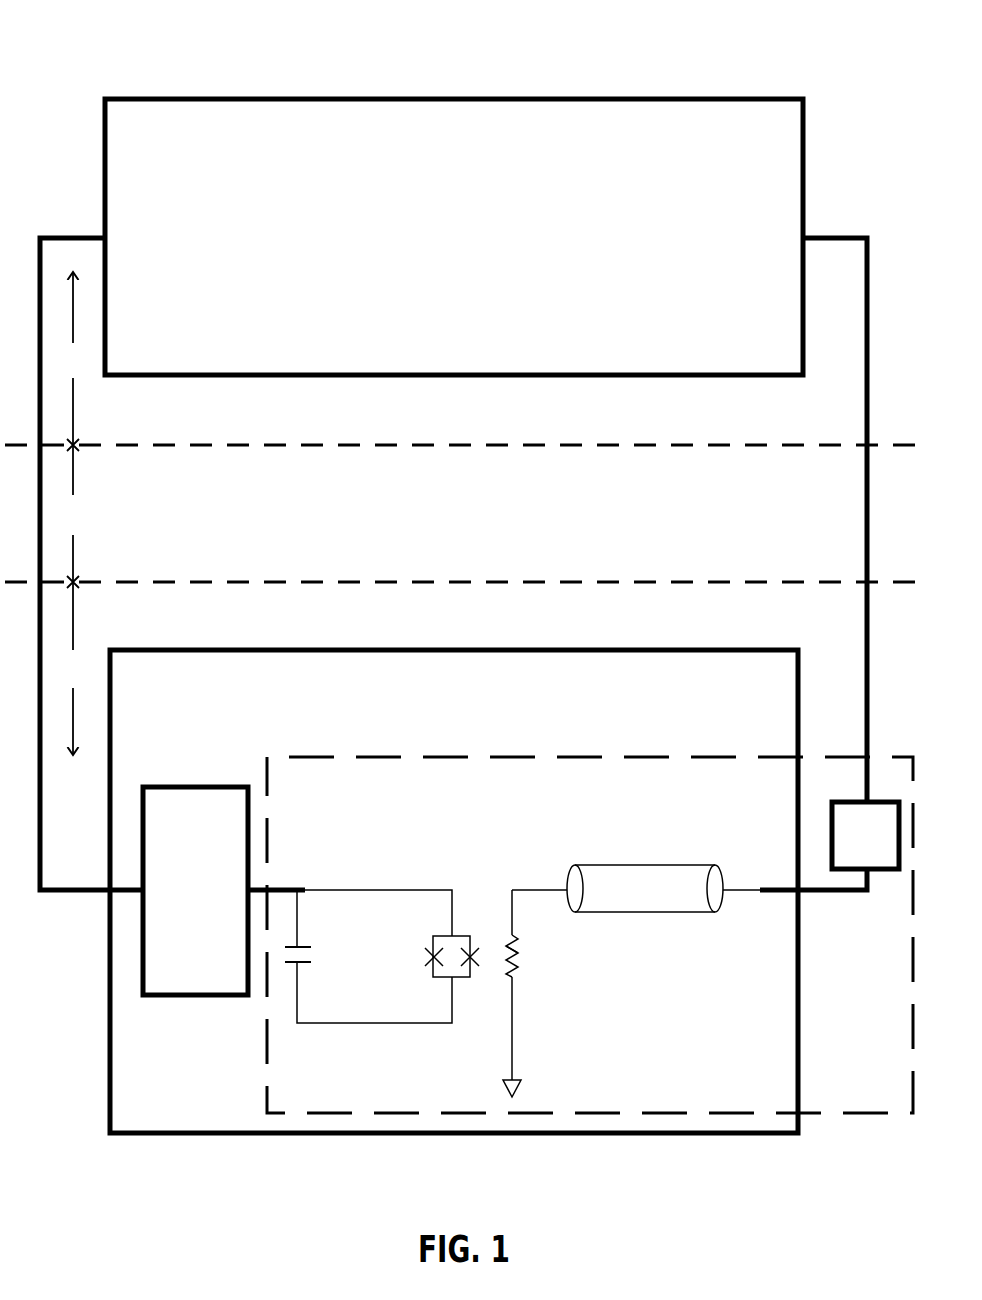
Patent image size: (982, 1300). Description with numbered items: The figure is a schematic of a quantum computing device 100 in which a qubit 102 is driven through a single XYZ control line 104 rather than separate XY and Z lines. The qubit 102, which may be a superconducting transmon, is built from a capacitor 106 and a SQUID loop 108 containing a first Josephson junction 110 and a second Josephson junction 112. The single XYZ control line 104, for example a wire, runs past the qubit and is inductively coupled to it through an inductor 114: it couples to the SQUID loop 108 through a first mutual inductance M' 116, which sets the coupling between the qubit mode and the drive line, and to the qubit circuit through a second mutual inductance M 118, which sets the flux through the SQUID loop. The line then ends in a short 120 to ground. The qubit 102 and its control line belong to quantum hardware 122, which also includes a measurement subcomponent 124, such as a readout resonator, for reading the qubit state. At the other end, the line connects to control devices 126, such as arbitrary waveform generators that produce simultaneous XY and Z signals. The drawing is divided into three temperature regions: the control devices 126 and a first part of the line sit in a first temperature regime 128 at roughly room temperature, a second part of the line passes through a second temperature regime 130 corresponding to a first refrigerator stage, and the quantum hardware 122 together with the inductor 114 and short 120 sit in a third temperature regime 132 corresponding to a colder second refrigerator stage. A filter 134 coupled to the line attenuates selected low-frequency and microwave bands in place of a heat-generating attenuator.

The quantum computing device 100 is at (93, 60).
The qubit 102 is at (392, 1030).
The single XYZ control line 104 is at (745, 893).
The capacitor 106 is at (284, 951).
The SQUID loop 108 is at (455, 935).
The first Josephson junction 110 is at (428, 957).
The second Josephson junction 112 is at (494, 958).
The inductor 114 is at (521, 937).
The first mutual inductance M' 116 is at (592, 949).
The second mutual inductance M 118 is at (536, 970).
The short 120 is at (522, 1097).
The quantum hardware 122 is at (108, 1043).
The measurement subcomponent 124 is at (224, 891).
The control devices 126 is at (805, 135).
The first temperature regime 128 is at (75, 353).
The second temperature regime 130 is at (75, 515).
The third temperature regime 132 is at (75, 675).
The filter 134 is at (886, 840).